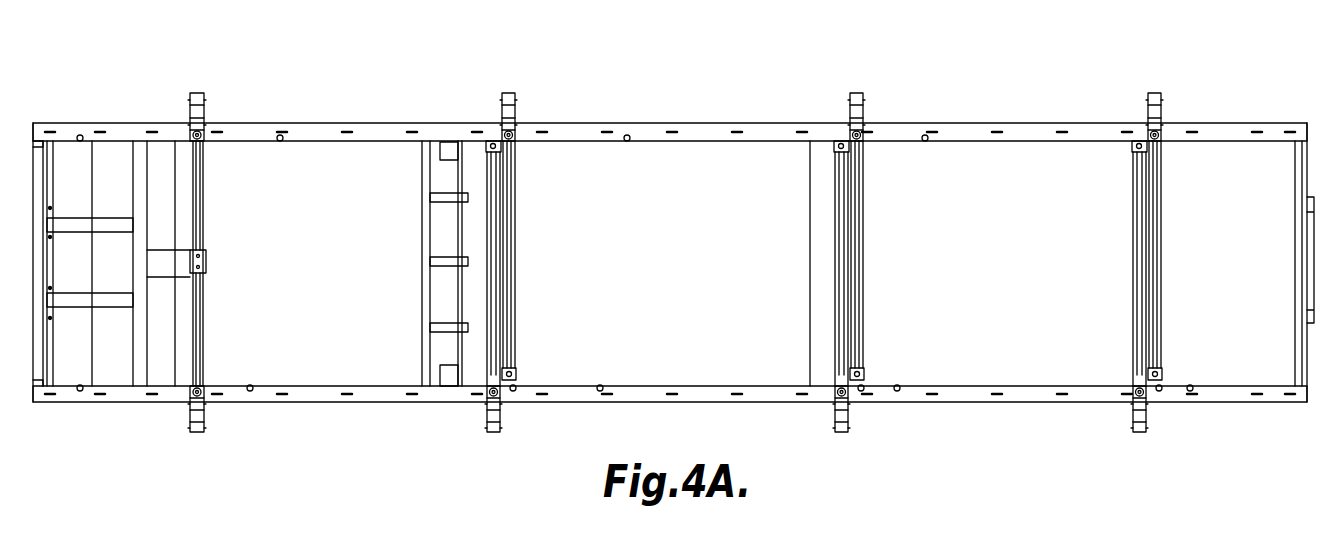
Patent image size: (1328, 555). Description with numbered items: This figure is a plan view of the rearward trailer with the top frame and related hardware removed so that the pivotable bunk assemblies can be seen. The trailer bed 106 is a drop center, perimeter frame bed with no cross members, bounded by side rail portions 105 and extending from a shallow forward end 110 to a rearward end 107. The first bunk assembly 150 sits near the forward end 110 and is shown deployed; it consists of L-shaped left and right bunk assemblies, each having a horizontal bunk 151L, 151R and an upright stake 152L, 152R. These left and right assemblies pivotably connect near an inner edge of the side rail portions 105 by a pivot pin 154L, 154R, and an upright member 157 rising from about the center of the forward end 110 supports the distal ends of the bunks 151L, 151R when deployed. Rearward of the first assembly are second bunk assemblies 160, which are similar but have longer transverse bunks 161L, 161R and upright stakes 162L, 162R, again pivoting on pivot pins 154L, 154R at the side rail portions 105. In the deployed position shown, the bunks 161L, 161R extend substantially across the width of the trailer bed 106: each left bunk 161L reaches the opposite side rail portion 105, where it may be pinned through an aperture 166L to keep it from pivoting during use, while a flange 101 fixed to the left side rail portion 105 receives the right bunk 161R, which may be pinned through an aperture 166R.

The flange 101 is at (513, 391).
The side rail portions 105 is at (332, 397).
The trailer bed 106 is at (323, 272).
The rearward end 107 is at (1284, 160).
The forward end 110 is at (70, 362).
The first bunk assembly 150 is at (204, 217).
The left horizontal bunk 151L is at (200, 333).
The right horizontal bunk 151R is at (200, 193).
The left upright stake 152L is at (197, 433).
The right upright stake 152R is at (195, 93).
The left pivot pin 154L is at (190, 390).
The right pivot pin 154R is at (202, 138).
The upright member 157 is at (183, 258).
The second bunk assemblies 160 is at (515, 227).
The left transverse bunk 161L is at (493, 313).
The right transverse bunk 161R is at (510, 180).
The left upright stake 162L is at (494, 436).
The right upright stake 162R is at (512, 93).
The left aperture 166L is at (487, 140).
The right aperture 166R is at (517, 372).